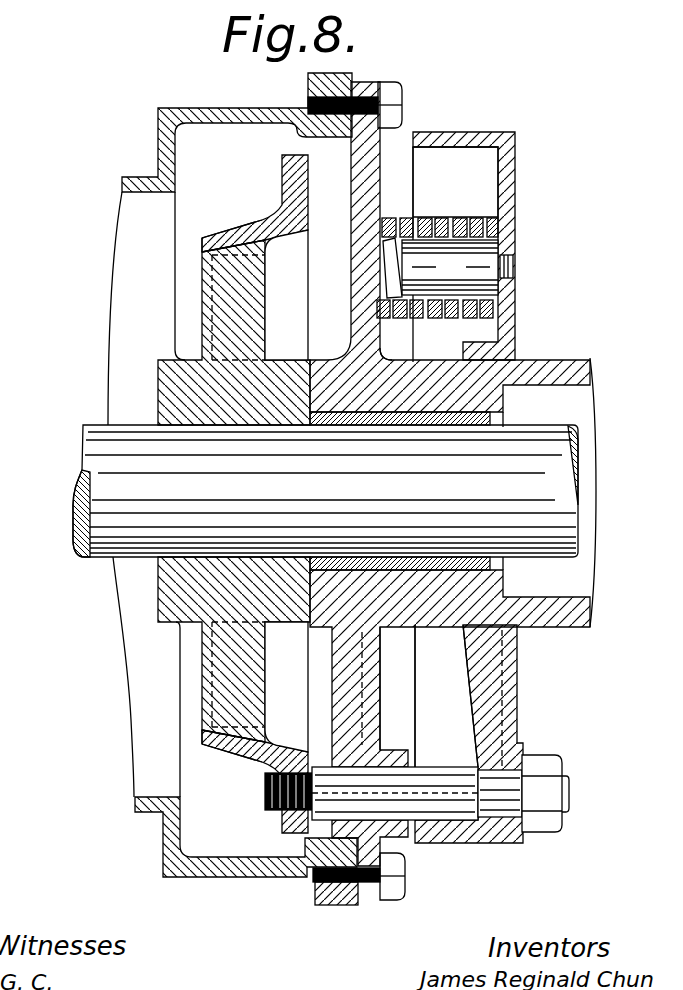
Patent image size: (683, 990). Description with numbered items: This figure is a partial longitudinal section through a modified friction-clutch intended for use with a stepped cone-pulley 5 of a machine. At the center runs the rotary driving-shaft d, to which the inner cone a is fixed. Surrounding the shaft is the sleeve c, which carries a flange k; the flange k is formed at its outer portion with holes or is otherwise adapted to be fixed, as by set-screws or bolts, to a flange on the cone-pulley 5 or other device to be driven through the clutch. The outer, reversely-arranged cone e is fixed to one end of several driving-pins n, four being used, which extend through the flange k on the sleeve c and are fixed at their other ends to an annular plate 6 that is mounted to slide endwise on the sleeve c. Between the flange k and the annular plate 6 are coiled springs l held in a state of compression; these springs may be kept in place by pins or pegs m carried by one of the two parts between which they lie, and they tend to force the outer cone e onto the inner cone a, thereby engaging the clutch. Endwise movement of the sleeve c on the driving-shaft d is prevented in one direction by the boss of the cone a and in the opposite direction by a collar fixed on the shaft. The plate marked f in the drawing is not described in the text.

The stepped cone-pulley 5 is at (256, 489).
The annular plate 6 is at (509, 176).
The inner cone a is at (278, 738).
The sleeve c is at (453, 474).
The rotary driving-shaft d is at (325, 491).
The outer cone e is at (234, 238).
The plate f is at (290, 843).
The flange k is at (429, 696).
The coiled springs l is at (455, 182).
The pins or pegs m is at (445, 268).
The driving-pins n is at (417, 793).